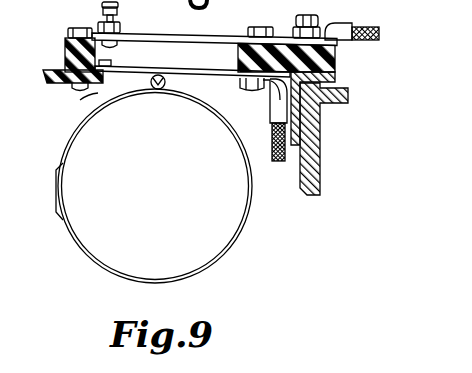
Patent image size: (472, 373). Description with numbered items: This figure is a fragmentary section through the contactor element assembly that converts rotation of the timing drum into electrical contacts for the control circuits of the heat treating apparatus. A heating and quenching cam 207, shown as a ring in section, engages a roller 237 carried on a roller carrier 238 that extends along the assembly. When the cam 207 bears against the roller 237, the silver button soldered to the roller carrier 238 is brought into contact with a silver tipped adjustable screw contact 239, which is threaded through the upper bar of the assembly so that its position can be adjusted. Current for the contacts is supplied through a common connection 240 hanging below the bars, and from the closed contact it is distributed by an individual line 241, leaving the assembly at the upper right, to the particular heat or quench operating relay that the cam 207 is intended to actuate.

The heating and quenching cam 207 is at (65, 148).
The roller 237 is at (166, 82).
The roller carrier 238 is at (195, 72).
The silver tipped adjustable screw contact 239 is at (118, 11).
The common connection 240 is at (275, 163).
The individual line 241 is at (364, 22).